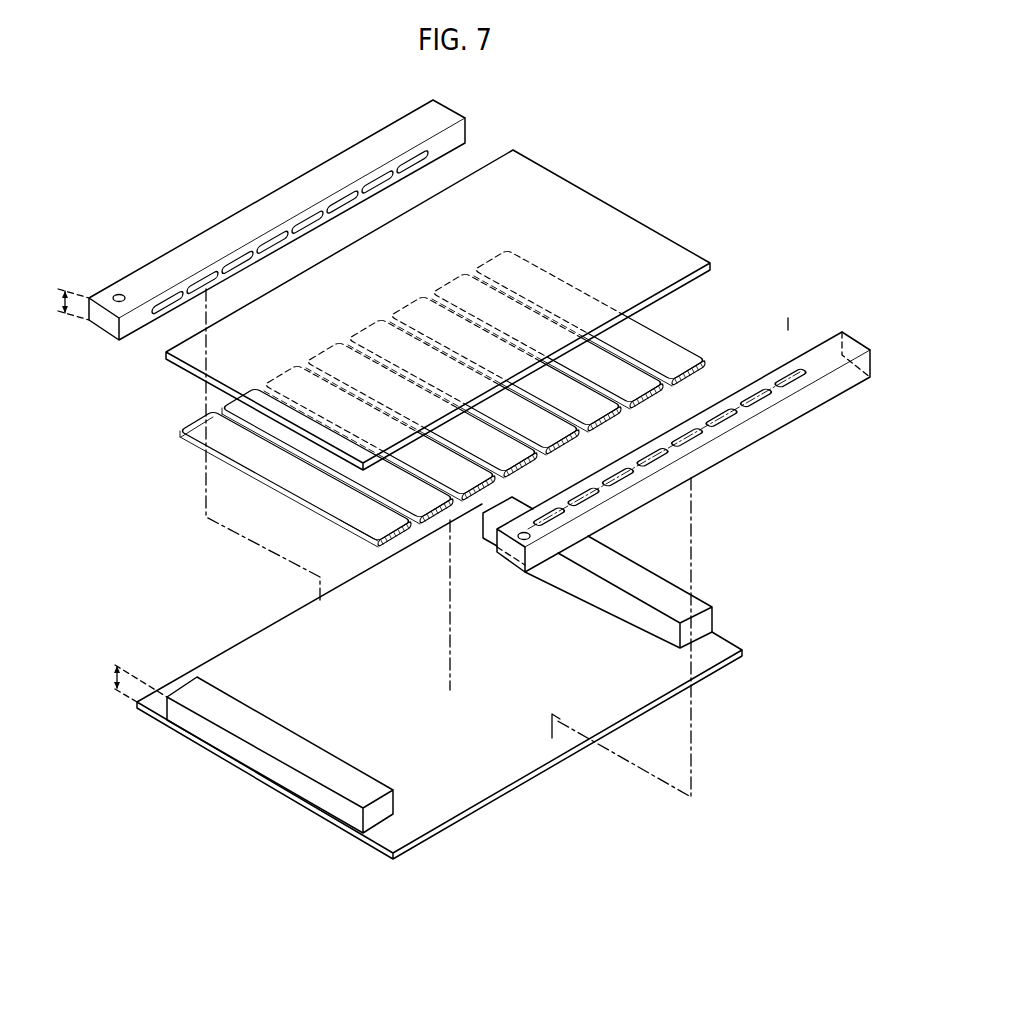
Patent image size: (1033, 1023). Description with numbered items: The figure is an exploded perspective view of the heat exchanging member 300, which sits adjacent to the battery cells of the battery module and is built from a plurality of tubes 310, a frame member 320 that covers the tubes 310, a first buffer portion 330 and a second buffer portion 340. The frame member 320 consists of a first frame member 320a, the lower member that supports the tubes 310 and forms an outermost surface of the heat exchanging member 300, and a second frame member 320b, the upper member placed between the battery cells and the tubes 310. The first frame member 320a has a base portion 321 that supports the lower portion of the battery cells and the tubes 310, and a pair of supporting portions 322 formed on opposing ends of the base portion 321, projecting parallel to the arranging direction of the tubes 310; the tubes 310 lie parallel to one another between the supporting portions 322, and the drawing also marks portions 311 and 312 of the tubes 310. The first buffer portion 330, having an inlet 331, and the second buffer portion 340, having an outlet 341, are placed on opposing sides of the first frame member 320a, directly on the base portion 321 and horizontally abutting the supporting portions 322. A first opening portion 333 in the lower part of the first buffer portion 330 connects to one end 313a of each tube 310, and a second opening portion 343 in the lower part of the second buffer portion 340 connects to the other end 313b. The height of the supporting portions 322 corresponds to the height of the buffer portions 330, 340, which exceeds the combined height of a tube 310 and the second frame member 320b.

The heat exchanging member 300 is at (679, 154).
The tube 310 is at (681, 348).
The electrode terminal portion 311 is at (396, 547).
The sealing portion 312 is at (411, 544).
The one end of the tube 313a is at (180, 431).
The other end of the tube 313b is at (379, 544).
The frame member 320 is at (93, 547).
The first frame member 320a is at (197, 658).
The second frame member 320b is at (207, 367).
The base portion 321 is at (400, 836).
The supporting portions 322 is at (386, 806).
The first buffer portion 330 is at (192, 254).
The inlet 331 is at (116, 295).
The first opening portion 333 is at (264, 253).
The second buffer portion 340 is at (728, 449).
The outlet 341 is at (531, 535).
The second opening portion 343 is at (778, 378).